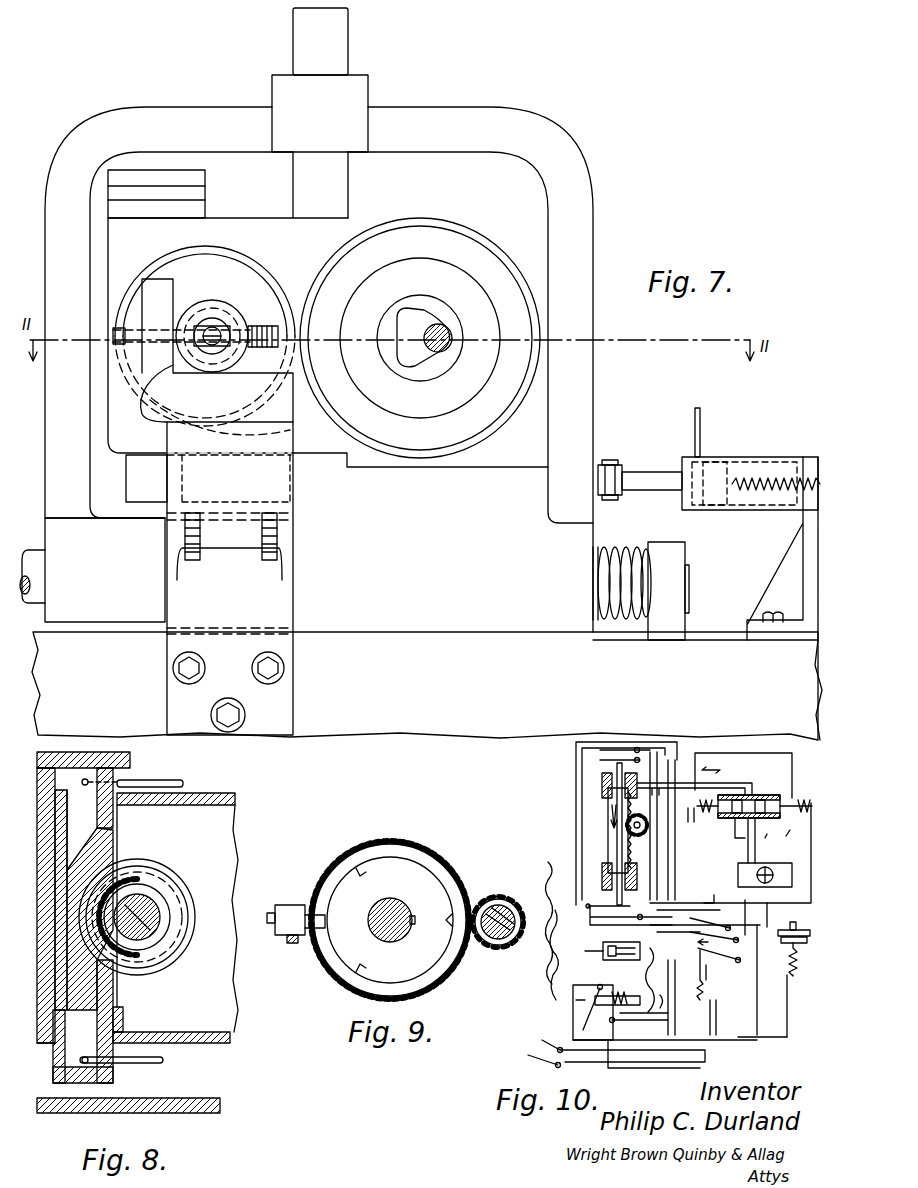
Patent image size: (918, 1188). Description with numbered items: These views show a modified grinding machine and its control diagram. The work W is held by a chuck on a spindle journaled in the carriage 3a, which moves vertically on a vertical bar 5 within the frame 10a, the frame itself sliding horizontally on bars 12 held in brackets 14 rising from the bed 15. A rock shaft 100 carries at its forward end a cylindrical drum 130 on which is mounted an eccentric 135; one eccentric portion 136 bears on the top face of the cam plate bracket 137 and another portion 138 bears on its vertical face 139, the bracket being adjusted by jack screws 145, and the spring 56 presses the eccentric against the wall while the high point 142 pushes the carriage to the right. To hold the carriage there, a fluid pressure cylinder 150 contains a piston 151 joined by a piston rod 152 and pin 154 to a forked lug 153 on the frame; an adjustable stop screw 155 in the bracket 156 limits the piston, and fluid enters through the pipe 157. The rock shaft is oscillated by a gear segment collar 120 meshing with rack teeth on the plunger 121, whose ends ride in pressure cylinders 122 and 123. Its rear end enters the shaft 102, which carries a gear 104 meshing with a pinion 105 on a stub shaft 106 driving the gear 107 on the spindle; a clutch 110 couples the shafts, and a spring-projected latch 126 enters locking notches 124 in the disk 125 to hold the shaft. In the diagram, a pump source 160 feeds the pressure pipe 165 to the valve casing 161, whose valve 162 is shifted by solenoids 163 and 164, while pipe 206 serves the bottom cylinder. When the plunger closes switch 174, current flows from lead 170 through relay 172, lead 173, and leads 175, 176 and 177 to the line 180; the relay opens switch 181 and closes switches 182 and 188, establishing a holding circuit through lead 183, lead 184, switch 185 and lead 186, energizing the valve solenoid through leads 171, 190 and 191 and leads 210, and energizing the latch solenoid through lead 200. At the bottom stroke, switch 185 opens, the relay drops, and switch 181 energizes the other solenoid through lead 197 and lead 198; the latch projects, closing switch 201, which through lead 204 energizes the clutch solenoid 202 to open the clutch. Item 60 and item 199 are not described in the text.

In FIG. 7, the vertical bar 5 is at (350, 64).
In FIG. 7, the carriage 3a is at (424, 222).
In FIG. 8, the carriage 3a is at (240, 820).
In FIG. 7, the frame 10a is at (590, 220).
In FIG. 7, the work W is at (428, 302).
In FIG. 7, the shaft 60 is at (447, 333).
In FIG. 7, the cylindrical drum 130 is at (168, 290).
In FIG. 7, the rock shaft 100 is at (215, 330).
In FIG. 7, the eccentric 135 is at (236, 320).
In FIG. 7, the eccentric portion 136 is at (240, 348).
In FIG. 7, the eccentric portion 138 is at (193, 328).
In FIG. 7, the high point 142 is at (268, 322).
In FIG. 7, the vertical face 139 is at (152, 380).
In FIG. 7, the cam plate bracket 137 is at (283, 416).
In FIG. 7, the jack screws 145 is at (262, 562).
In FIG. 7, the bars 12 is at (38, 552).
In FIG. 7, the brackets 14 is at (672, 568).
In FIG. 7, the bed 15 is at (410, 712).
In FIG. 7, the spring 56 is at (615, 553).
In FIG. 7, the fluid pressure cylinder 150 is at (760, 462).
In FIG. 10, the fluid pressure cylinder 150 is at (600, 948).
In FIG. 7, the piston 151 is at (720, 470).
In FIG. 7, the piston rod 152 is at (656, 476).
In FIG. 7, the forked lug 153 is at (598, 480).
In FIG. 7, the pin 154 is at (610, 462).
In FIG. 7, the adjustable stop screw 155 is at (770, 492).
In FIG. 7, the bracket 156 is at (770, 590).
In FIG. 7, the pipe 157 is at (696, 416).
In FIG. 10, the pipe 157 is at (574, 846).
In FIG. 8, the pressure pipe 165 is at (172, 784).
In FIG. 10, the pressure pipe 165 is at (742, 790).
In FIG. 8, the pressure cylinder 122 is at (96, 812).
In FIG. 10, the pressure cylinder 122 is at (602, 784).
In FIG. 8, the gear segment collar 120 is at (160, 892).
In FIG. 8, the plunger 121 is at (96, 992).
In FIG. 10, the plunger 121 is at (608, 808).
In FIG. 8, the pressure cylinder 123 is at (112, 1070).
In FIG. 10, the pressure cylinder 123 is at (614, 870).
In FIG. 9, the locking notches 124 is at (364, 868).
In FIG. 9, the disk 125 is at (420, 872).
In FIG. 10, the disk 125 is at (666, 992).
In FIG. 9, the shaft 102 is at (403, 920).
In FIG. 9, the gear 104 is at (455, 880).
In FIG. 9, the pinion 105 is at (500, 896).
In FIG. 9, the stub shaft 106 is at (498, 940).
In FIG. 9, the gear 107 is at (550, 868).
In FIG. 9, the latch 126 is at (290, 912).
In FIG. 10, the latch 126 is at (626, 990).
In FIG. 10, the switch 174 is at (600, 757).
In FIG. 10, the lead 191 is at (718, 748).
In FIG. 10, the switch 185 is at (602, 878).
In FIG. 10, the lead 175 is at (636, 840).
In FIG. 10, the pipe 206 is at (694, 826).
In FIG. 10, the valve casing 161 is at (770, 790).
In FIG. 10, the solenoid 164 is at (805, 798).
In FIG. 10, the source 160 is at (780, 862).
In FIG. 10, the solenoid 163 is at (700, 829).
In FIG. 10, the valve 162 is at (728, 836).
In FIG. 10, the lead 197 is at (712, 866).
In FIG. 10, the lead 184 is at (723, 886).
In FIG. 10, the lead 176 is at (708, 898).
In FIG. 10, the lead 198 is at (716, 912).
In FIG. 10, the lead 186 is at (586, 918).
In FIG. 10, the lead 173 is at (654, 980).
In FIG. 10, the switch 181 is at (721, 925).
In FIG. 10, the switch 182 is at (727, 949).
In FIG. 10, the leads 210 is at (698, 933).
In FIG. 10, the lead 183 is at (700, 975).
In FIG. 10, the switch 188 is at (752, 995).
In FIG. 10, the conductor 199 is at (586, 1024).
In FIG. 10, the clutch 110 is at (806, 920).
In FIG. 10, the clutch solenoid 202 is at (808, 977).
In FIG. 10, the lead 204 is at (790, 1008).
In FIG. 10, the switch 201 is at (573, 998).
In FIG. 10, the lead 190 is at (639, 1023).
In FIG. 10, the lead 177 is at (693, 997).
In FIG. 10, the relay 172 is at (730, 1017).
In FIG. 10, the lead 200 is at (710, 1060).
In FIG. 10, the line 180 is at (543, 1038).
In FIG. 10, the lead 170 is at (533, 1057).
In FIG. 10, the lead 171 is at (606, 1060).